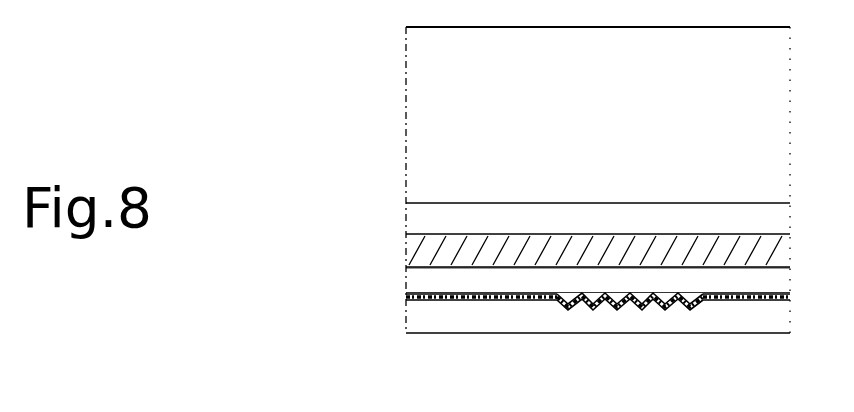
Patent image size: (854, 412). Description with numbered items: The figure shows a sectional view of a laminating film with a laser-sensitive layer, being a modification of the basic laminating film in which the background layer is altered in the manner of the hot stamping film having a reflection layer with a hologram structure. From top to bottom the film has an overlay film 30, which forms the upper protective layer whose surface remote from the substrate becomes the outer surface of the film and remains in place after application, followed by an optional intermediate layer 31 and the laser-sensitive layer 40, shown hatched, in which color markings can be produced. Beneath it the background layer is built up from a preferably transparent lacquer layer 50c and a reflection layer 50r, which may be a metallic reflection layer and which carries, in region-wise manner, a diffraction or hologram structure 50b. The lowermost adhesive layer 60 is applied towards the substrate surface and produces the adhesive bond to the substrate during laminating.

The overlay film 30 is at (452, 82).
The intermediate layer 31 is at (452, 216).
The laser-sensitive layer 40 is at (452, 247).
The lacquer layer 50c is at (452, 279).
The reflection layer 50r is at (445, 296).
The diffraction or hologram structure 50b is at (617, 305).
The adhesive layer 60 is at (452, 315).